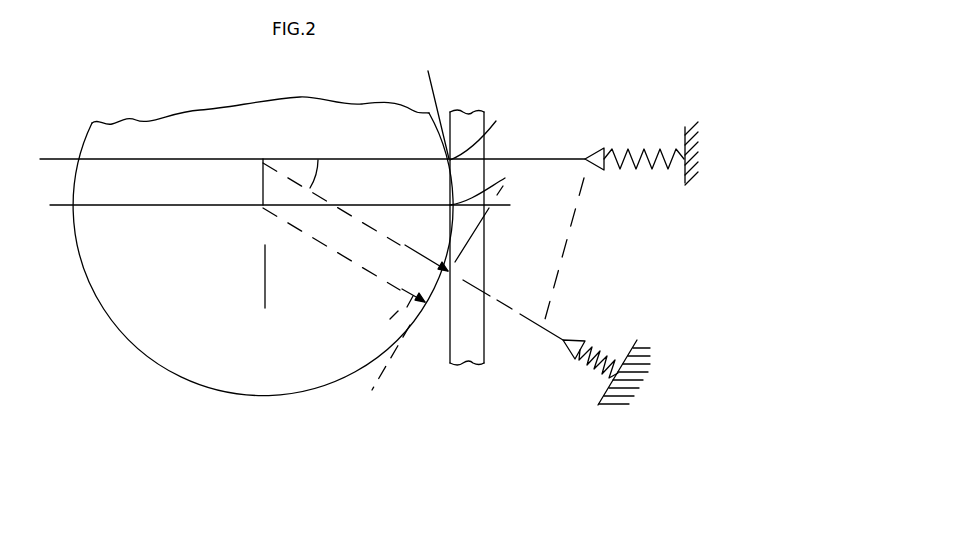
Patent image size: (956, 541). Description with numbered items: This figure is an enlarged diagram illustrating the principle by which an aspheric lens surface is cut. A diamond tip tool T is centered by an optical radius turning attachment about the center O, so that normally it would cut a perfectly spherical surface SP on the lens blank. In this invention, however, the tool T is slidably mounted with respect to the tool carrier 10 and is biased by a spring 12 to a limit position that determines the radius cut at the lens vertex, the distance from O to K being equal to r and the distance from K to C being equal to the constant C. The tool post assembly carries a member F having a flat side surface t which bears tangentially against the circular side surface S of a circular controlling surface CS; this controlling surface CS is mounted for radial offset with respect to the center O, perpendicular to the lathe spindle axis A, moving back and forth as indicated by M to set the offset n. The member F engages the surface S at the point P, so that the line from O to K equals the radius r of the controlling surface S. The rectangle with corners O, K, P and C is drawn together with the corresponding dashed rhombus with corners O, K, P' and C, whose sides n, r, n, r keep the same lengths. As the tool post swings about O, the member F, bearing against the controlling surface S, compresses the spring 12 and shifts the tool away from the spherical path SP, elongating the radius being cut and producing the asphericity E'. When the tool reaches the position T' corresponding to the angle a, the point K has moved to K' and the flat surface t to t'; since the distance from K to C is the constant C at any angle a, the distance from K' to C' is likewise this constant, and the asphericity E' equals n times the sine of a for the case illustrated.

The circular side surface S is at (236, 395).
The circular controlling surface CS is at (152, 358).
The lathe spindle axis A is at (62, 159).
The center O is at (263, 160).
The constant distance K- C is at (414, 215).
The radial offset direction M is at (266, 270).
The offset n is at (263, 187).
The angle a is at (320, 168).
The radius of the controlling surface r is at (371, 160).
The flat side surface t is at (434, 106).
The flat surface in swung position t' is at (387, 355).
The tangent point in swung position P' is at (433, 329).
The member F is at (466, 112).
The point K is at (462, 190).
The tangent point P is at (483, 188).
The asphericity E' is at (498, 280).
The point K in swung position K' is at (484, 256).
The spherical surface SP is at (568, 252).
The diamond tip tool T is at (604, 132).
The spring 12 is at (632, 150).
The tool carrier 10 is at (690, 124).
The tool in swung position T' is at (599, 333).
The constant distance in swung position C' is at (582, 314).